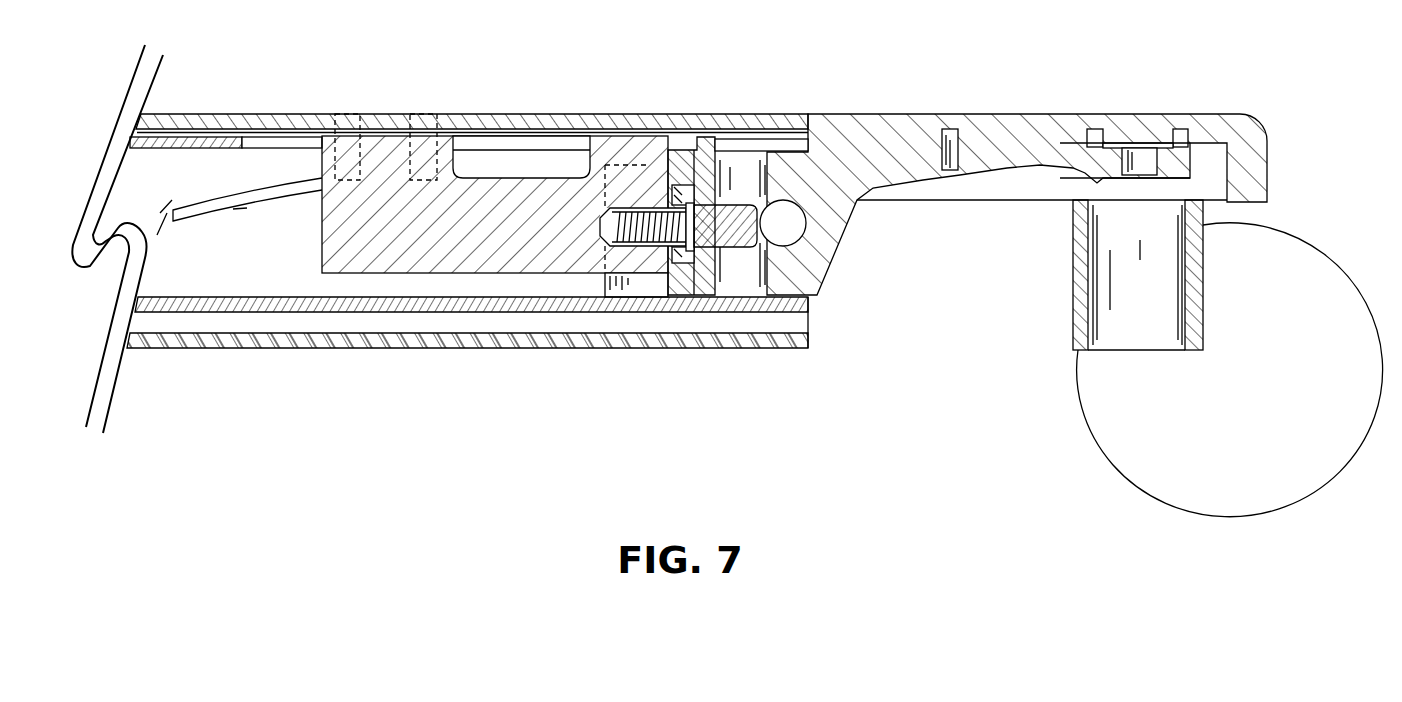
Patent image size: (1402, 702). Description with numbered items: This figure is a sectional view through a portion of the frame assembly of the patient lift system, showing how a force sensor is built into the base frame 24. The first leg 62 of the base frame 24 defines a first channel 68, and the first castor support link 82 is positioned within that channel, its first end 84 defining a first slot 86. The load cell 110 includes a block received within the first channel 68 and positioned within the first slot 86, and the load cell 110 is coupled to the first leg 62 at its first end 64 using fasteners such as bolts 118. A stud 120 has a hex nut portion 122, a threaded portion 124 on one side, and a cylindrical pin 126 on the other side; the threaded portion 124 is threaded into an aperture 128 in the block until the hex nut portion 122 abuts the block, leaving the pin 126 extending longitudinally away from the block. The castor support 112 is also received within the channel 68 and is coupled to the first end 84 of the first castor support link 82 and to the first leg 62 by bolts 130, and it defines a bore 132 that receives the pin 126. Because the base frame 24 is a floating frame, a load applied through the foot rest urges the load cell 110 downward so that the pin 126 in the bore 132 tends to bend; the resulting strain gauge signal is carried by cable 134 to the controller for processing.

The base frame 24 is at (190, 113).
The first leg 62 is at (491, 345).
The first end 64 is at (698, 108).
The first channel 68 is at (277, 258).
The first castor support link 82 is at (360, 312).
The first end 84 is at (790, 303).
The first slot 86 is at (771, 143).
The load cell 110 is at (510, 232).
The castor support 112 is at (1025, 128).
The bolts 118 is at (413, 170).
The stud 120 is at (662, 271).
The hex nut portion 122 is at (678, 202).
The threaded portion 124 is at (625, 222).
The pin 126 is at (717, 237).
The aperture 128 is at (640, 205).
The bolts 130 is at (710, 139).
The bore 132 is at (745, 198).
The cable 134 is at (222, 210).